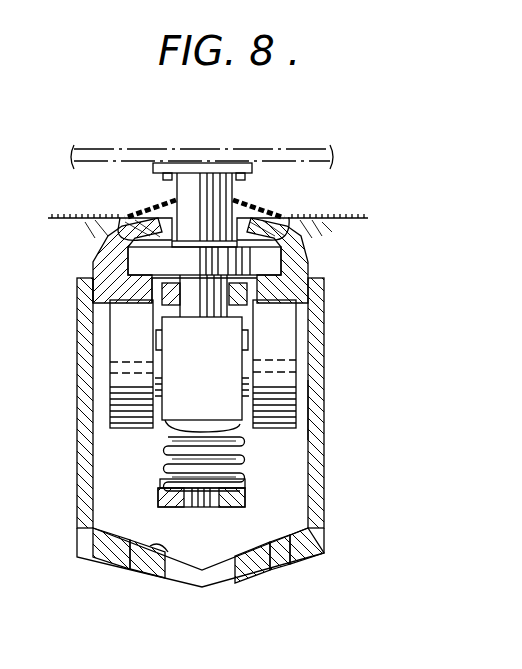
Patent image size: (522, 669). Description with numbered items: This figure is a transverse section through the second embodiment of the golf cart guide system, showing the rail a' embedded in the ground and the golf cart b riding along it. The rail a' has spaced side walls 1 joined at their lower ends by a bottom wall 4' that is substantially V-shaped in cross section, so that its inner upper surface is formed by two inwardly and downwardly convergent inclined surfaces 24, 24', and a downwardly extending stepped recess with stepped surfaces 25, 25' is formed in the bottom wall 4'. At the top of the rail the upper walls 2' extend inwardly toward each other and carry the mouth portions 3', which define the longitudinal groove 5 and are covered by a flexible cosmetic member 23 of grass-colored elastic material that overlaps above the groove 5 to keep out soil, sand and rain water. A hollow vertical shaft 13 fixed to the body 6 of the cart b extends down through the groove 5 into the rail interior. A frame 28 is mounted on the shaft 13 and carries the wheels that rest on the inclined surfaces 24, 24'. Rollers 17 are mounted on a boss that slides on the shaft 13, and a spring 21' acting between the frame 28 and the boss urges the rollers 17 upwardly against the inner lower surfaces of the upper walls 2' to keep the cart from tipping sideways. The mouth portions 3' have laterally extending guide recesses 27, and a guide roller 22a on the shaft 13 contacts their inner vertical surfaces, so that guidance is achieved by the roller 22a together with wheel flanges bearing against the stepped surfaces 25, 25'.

The golf cart b is at (309, 147).
The cart body 6 is at (290, 156).
The longitudinal groove 5 is at (162, 212).
The flexible cosmetic member 23 is at (168, 212).
The mouth portion 3' is at (207, 207).
The upper wall 2' is at (208, 208).
The guide recess 27 is at (142, 262).
The guide roller 22a is at (283, 265).
The vertical shaft 13 is at (203, 306).
The roller 17 is at (112, 368).
The spring 21' is at (233, 464).
The frame 28 is at (160, 495).
The side wall 1 is at (300, 515).
The rail a' is at (350, 402).
The inclined surface 24' is at (116, 531).
The stepped surface 25' is at (158, 582).
The stepped surface 25 is at (239, 553).
The inclined surface 24 is at (270, 532).
The bottom wall 4' is at (308, 570).